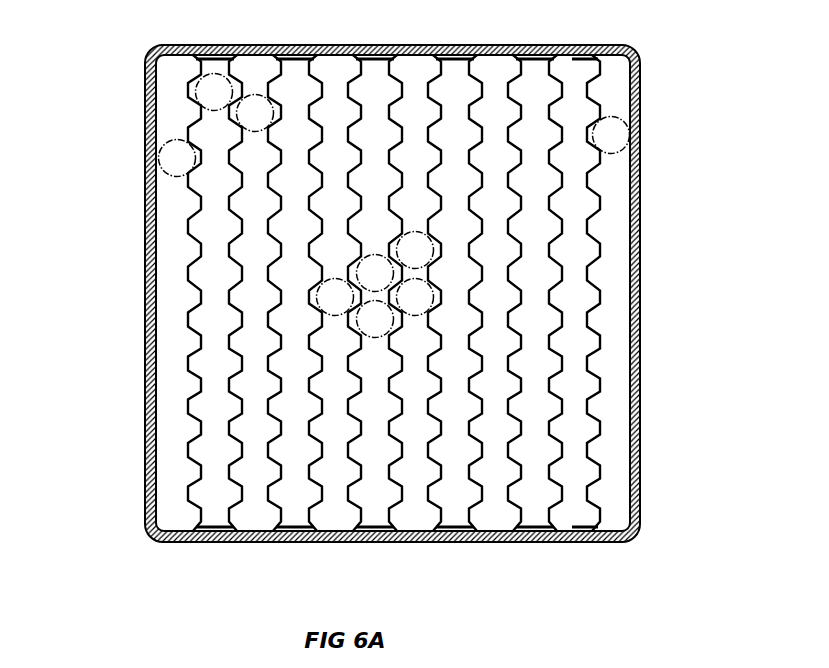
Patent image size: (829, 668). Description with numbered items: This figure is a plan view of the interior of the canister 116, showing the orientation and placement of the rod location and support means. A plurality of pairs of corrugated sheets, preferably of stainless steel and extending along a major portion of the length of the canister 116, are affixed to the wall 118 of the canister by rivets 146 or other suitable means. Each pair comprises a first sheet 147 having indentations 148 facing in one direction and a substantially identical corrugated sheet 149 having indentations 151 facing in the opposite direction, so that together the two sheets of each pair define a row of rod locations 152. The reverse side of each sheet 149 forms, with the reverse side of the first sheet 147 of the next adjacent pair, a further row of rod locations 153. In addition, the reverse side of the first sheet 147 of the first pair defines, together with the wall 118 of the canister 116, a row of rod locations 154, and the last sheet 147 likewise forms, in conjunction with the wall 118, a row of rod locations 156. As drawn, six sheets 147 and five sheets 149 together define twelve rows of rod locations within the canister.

The canister 116 is at (370, 301).
The wall 118 is at (500, 45).
The rivets 146 is at (190, 72).
The first sheet 147 is at (233, 522).
The indentations 148 is at (177, 319).
The corrugated sheet 149 is at (506, 297).
The indentations 151 is at (237, 323).
The rod locations 152 is at (207, 135).
The rod locations 153 is at (193, 437).
The rod locations 154 is at (177, 380).
The rod locations 156 is at (612, 292).